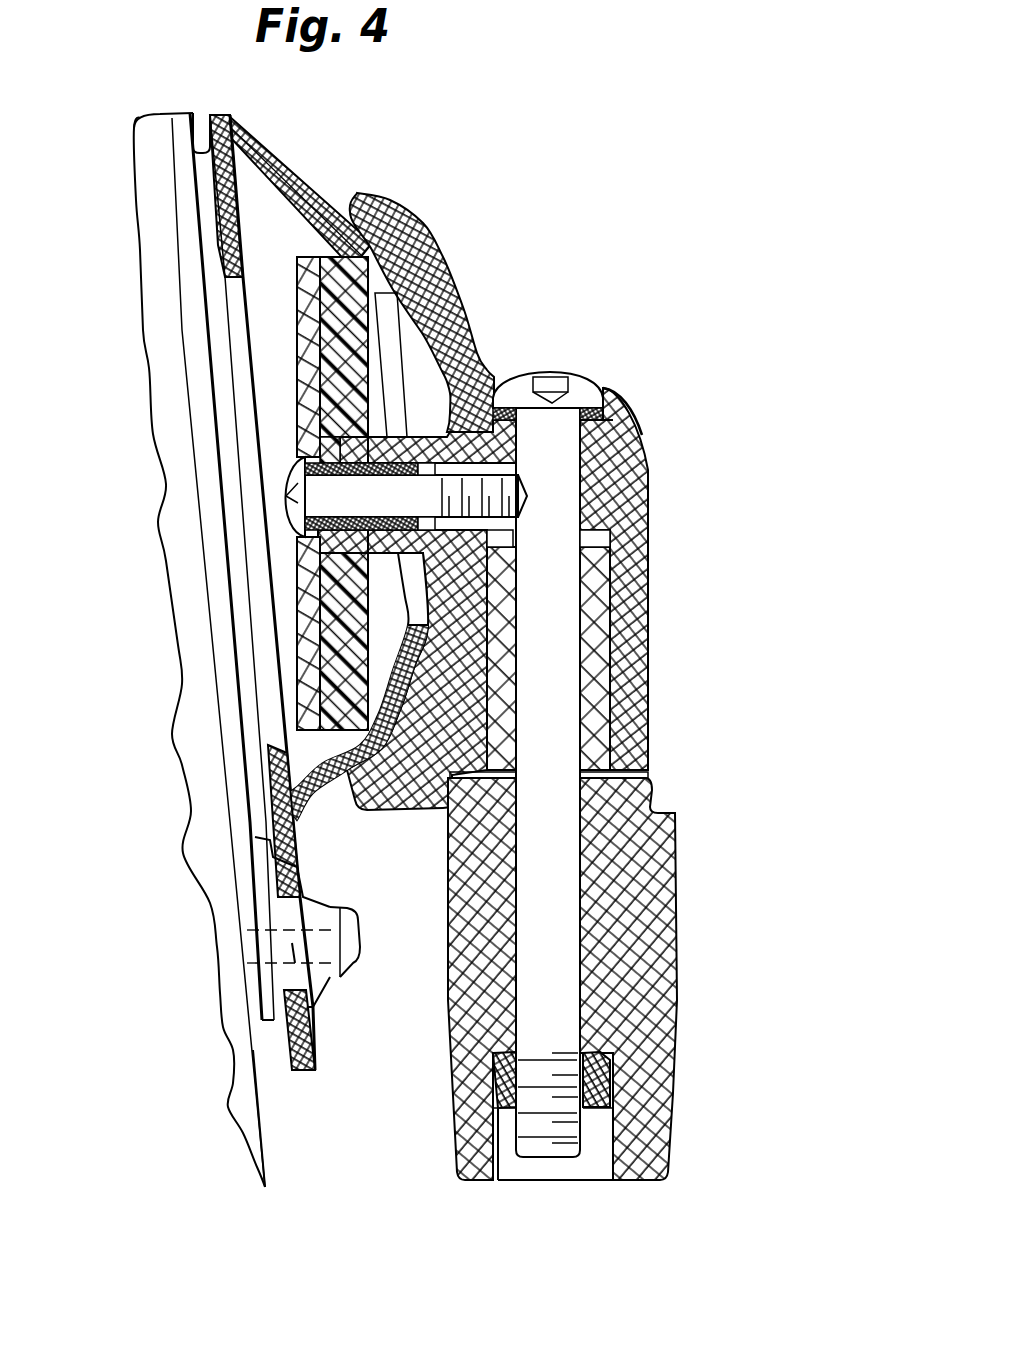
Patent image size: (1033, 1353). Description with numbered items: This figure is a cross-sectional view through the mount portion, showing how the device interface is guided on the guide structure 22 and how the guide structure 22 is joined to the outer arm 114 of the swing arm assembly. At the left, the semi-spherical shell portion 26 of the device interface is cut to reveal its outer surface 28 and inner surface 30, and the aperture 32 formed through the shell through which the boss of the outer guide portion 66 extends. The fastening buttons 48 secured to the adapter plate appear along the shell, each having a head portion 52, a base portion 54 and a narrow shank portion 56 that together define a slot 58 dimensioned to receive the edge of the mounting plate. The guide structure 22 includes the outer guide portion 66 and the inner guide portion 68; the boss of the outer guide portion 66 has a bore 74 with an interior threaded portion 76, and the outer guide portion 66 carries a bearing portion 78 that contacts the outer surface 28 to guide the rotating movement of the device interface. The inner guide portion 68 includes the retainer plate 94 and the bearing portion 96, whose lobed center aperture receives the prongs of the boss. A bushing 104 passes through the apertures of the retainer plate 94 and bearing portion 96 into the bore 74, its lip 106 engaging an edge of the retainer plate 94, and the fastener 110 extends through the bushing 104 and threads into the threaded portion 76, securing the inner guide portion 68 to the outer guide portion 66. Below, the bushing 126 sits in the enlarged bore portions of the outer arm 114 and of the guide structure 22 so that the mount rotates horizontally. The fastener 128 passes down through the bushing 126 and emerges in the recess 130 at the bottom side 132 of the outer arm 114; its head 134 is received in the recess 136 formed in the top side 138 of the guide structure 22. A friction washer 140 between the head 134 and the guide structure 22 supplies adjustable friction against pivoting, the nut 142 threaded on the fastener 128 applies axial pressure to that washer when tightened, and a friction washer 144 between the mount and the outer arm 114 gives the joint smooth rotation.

The guide structure 22 is at (447, 270).
The semi-spherical shell portion 26 is at (243, 128).
The outer surface 28 is at (268, 142).
The inner surface 30 is at (286, 183).
The aperture 32 is at (296, 618).
The fastening button 48 is at (340, 979).
The head portion 52 is at (328, 995).
The base portion 54 is at (256, 1050).
The shank portion 56 is at (272, 857).
The slot 58 is at (314, 1043).
The outer guide portion 66 is at (425, 228).
The inner guide portion 68 is at (297, 350).
The bore 74 is at (483, 372).
The threaded portion 76 is at (502, 372).
The bearing portion 78 is at (350, 200).
The retainer plate 94 is at (403, 595).
The bearing portion 96 is at (312, 740).
The bushing 104 is at (402, 360).
The lip 106 is at (297, 432).
The fastener 110 is at (285, 496).
The outer arm 114 is at (677, 868).
The bushing 126 is at (650, 609).
The fastener 128 is at (583, 392).
The recess 130 is at (593, 1172).
The bottom side 132 is at (645, 1182).
The head 134 is at (593, 378).
The recess 136 is at (603, 394).
The top side 138 is at (620, 399).
The friction washer 140 is at (605, 418).
The nut 142 is at (498, 1183).
The friction washer 144 is at (650, 773).